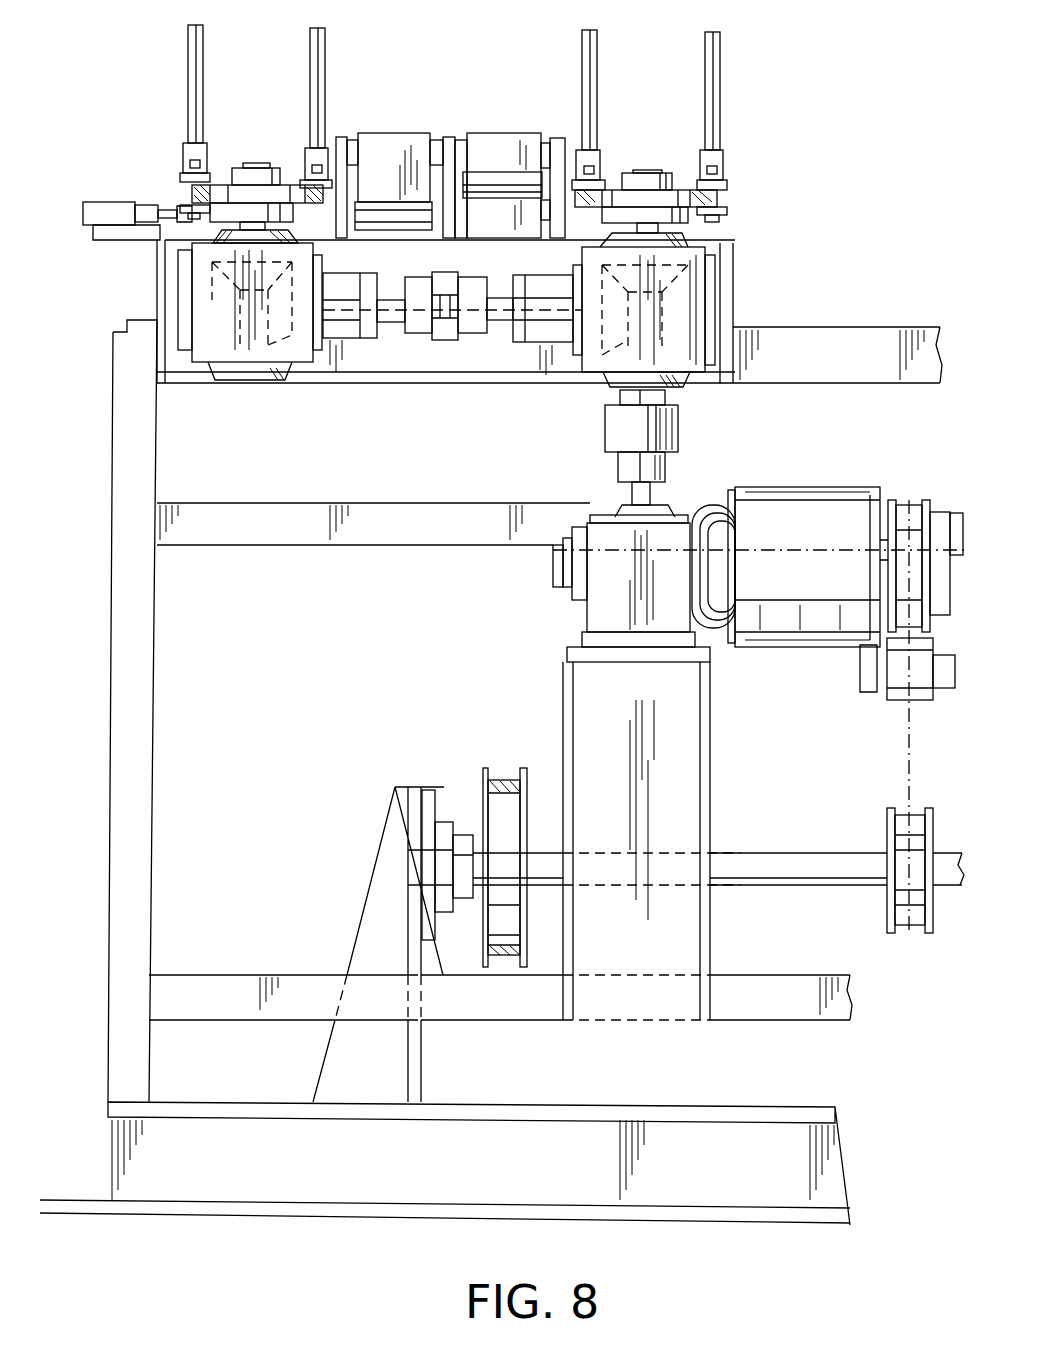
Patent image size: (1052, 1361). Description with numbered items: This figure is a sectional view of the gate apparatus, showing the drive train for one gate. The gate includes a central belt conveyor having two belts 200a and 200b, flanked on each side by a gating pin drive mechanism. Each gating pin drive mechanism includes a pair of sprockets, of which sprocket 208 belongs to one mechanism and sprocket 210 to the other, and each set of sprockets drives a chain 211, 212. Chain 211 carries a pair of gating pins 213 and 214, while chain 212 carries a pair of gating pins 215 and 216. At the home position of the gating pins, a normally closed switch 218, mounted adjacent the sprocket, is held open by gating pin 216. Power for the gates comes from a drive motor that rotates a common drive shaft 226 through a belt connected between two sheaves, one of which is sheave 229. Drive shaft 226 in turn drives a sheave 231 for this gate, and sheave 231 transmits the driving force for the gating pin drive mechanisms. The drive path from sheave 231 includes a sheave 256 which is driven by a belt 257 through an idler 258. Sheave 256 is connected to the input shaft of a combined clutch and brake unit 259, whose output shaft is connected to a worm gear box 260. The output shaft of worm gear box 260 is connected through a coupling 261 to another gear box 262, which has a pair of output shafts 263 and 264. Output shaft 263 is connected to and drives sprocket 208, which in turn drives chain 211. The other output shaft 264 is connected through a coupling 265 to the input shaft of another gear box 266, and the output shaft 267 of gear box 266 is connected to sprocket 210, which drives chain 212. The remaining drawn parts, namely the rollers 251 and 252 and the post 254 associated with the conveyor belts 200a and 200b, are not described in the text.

The belt 200a is at (481, 145).
The belt 200b is at (396, 150).
The sprocket 208 is at (695, 195).
The sprocket 210 is at (212, 192).
The chain 211 is at (712, 196).
The chain 212 is at (193, 196).
The gating pin 213 is at (586, 48).
The gating pin 214 is at (720, 90).
The gating pin 215 is at (318, 45).
The gating pin 216 is at (193, 78).
The switch 218 is at (106, 200).
The drive shaft 226 is at (778, 875).
The sheave 229 is at (487, 770).
The sheave 231 is at (890, 840).
The roller 251 is at (410, 218).
The roller 252 is at (516, 175).
The frame post 254 is at (447, 137).
The sheave 256 is at (918, 505).
The belt 257 is at (908, 752).
The idler 258 is at (900, 688).
The combined clutch and brake unit 259 is at (840, 635).
The worm gear box 260 is at (593, 605).
The coupling 261 is at (668, 430).
The gear box 262 is at (688, 298).
The output shaft 263 is at (688, 238).
The output shaft 264 is at (498, 300).
The coupling 265 is at (438, 335).
The gear box 266 is at (205, 318).
The output shaft 267 is at (280, 237).